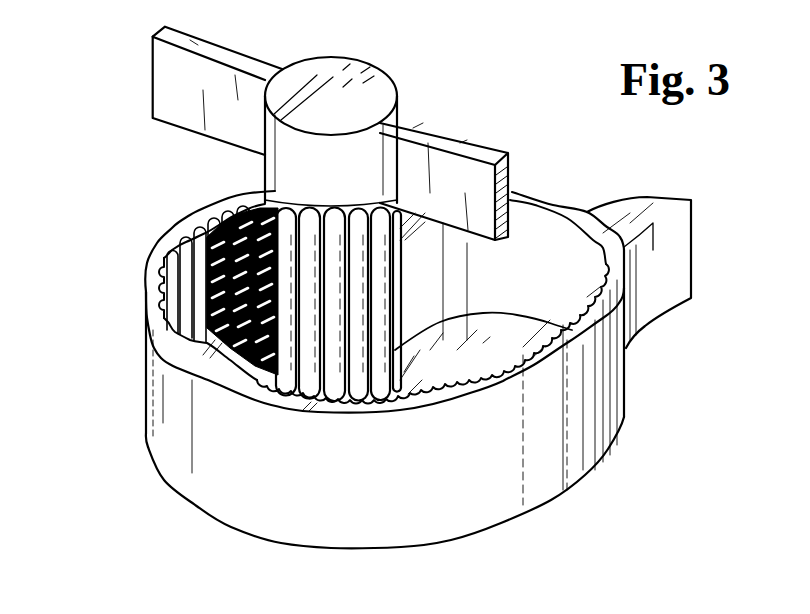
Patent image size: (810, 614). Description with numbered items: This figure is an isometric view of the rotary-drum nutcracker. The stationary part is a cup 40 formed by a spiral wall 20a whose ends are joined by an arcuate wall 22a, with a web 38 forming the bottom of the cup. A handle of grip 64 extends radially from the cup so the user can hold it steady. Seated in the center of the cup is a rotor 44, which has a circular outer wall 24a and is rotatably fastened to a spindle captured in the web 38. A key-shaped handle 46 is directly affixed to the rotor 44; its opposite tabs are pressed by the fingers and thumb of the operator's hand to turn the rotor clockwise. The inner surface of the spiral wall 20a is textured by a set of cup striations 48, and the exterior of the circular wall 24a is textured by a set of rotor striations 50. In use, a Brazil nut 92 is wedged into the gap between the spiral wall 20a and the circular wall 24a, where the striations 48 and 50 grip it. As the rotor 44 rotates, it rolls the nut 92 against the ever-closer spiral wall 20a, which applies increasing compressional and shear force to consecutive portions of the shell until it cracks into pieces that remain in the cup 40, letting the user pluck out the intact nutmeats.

The spiral wall 20a is at (160, 300).
The arcuate wall 22a is at (541, 202).
The circular outer wall 24a is at (400, 92).
The web 38 is at (507, 337).
The cup 40 is at (560, 450).
The rotor 44 is at (345, 66).
The handle 46 is at (180, 84).
The striations 48 is at (575, 340).
The striations 50 is at (300, 358).
The handle of grip 64 is at (655, 252).
The Brazil nut 92 is at (205, 255).